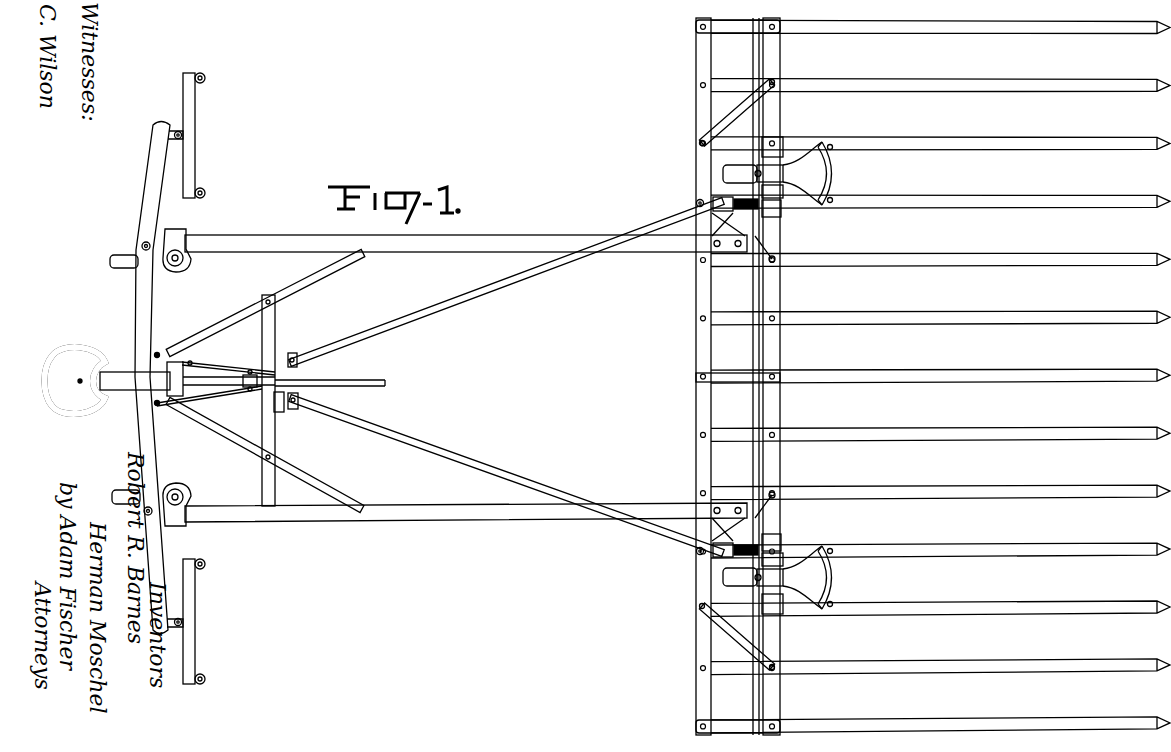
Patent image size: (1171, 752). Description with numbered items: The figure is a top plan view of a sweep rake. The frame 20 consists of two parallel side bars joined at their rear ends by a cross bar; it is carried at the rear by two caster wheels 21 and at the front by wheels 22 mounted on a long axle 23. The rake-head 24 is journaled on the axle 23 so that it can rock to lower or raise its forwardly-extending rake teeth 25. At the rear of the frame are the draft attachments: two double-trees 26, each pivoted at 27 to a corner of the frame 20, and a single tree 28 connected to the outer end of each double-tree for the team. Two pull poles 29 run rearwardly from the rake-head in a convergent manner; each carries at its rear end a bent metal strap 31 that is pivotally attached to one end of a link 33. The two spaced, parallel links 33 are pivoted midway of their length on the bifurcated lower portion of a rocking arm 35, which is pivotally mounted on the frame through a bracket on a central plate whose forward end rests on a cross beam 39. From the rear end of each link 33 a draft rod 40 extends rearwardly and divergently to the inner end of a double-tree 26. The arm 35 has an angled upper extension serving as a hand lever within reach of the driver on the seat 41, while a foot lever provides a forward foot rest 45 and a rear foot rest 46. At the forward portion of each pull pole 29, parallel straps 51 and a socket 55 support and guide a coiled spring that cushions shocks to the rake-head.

The frame 20 is at (286, 244).
The caster wheels 21 is at (124, 262).
The wheels 22 is at (732, 173).
The axle 23 is at (778, 288).
The rake-head 24 is at (703, 347).
The rake teeth 25 is at (965, 143).
The double-trees 26 is at (152, 192).
The pivot 27 is at (144, 242).
The single tree 28 is at (195, 98).
The pull poles 29 is at (520, 280).
The bent metal strap 31 is at (290, 355).
The link 33 is at (260, 366).
The rocking arm 35 is at (357, 386).
The cross beam 39 is at (267, 318).
The draft rod 40 is at (213, 367).
The seat 41 is at (82, 362).
The foot rest 45 is at (277, 408).
The foot rest 46 is at (222, 389).
The straps 51 is at (698, 204).
The socket 55 is at (710, 241).